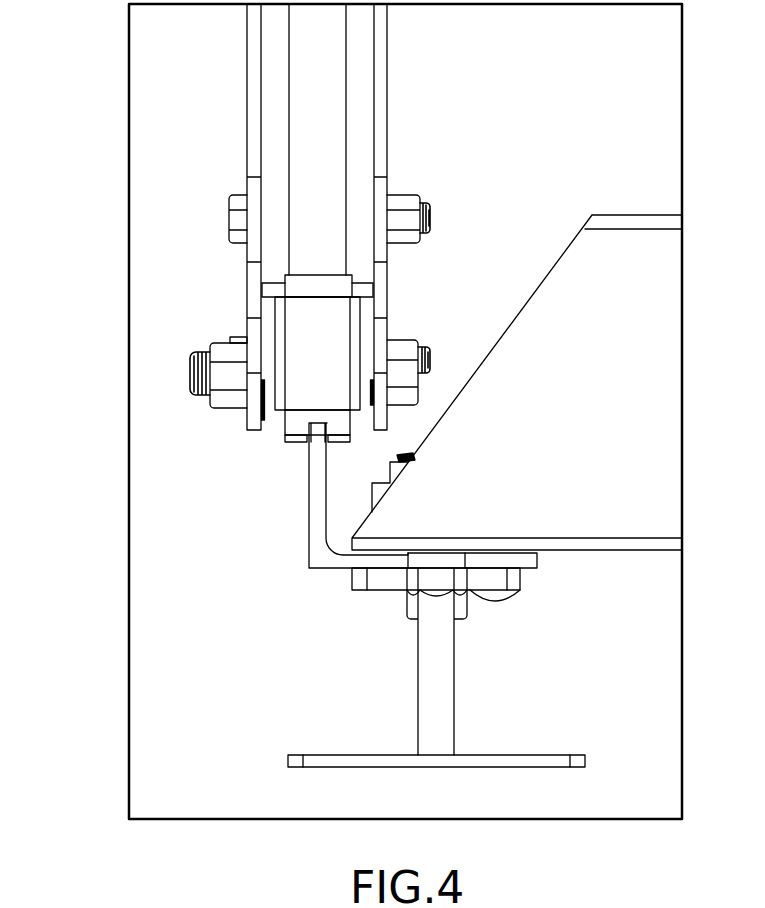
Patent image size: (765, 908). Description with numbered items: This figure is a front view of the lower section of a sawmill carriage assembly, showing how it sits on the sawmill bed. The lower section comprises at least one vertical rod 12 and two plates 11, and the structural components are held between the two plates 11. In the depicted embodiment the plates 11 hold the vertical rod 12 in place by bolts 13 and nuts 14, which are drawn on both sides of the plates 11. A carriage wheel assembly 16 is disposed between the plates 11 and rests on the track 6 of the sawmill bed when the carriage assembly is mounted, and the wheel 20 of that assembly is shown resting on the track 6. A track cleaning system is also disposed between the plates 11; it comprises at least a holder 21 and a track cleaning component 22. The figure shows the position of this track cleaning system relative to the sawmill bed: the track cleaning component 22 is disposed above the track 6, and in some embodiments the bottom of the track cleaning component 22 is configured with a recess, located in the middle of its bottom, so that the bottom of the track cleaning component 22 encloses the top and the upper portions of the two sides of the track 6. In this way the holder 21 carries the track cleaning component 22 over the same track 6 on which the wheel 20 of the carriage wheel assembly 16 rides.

The track 6 is at (317, 510).
The plates 11 is at (378, 32).
The vertical rod 12 is at (360, 131).
The bolts 13 is at (237, 221).
The nuts 14 is at (400, 203).
The carriage wheel assembly 16 is at (275, 417).
The wheel 20 is at (338, 442).
The holder 21 is at (328, 328).
The track cleaning component 22 is at (318, 282).